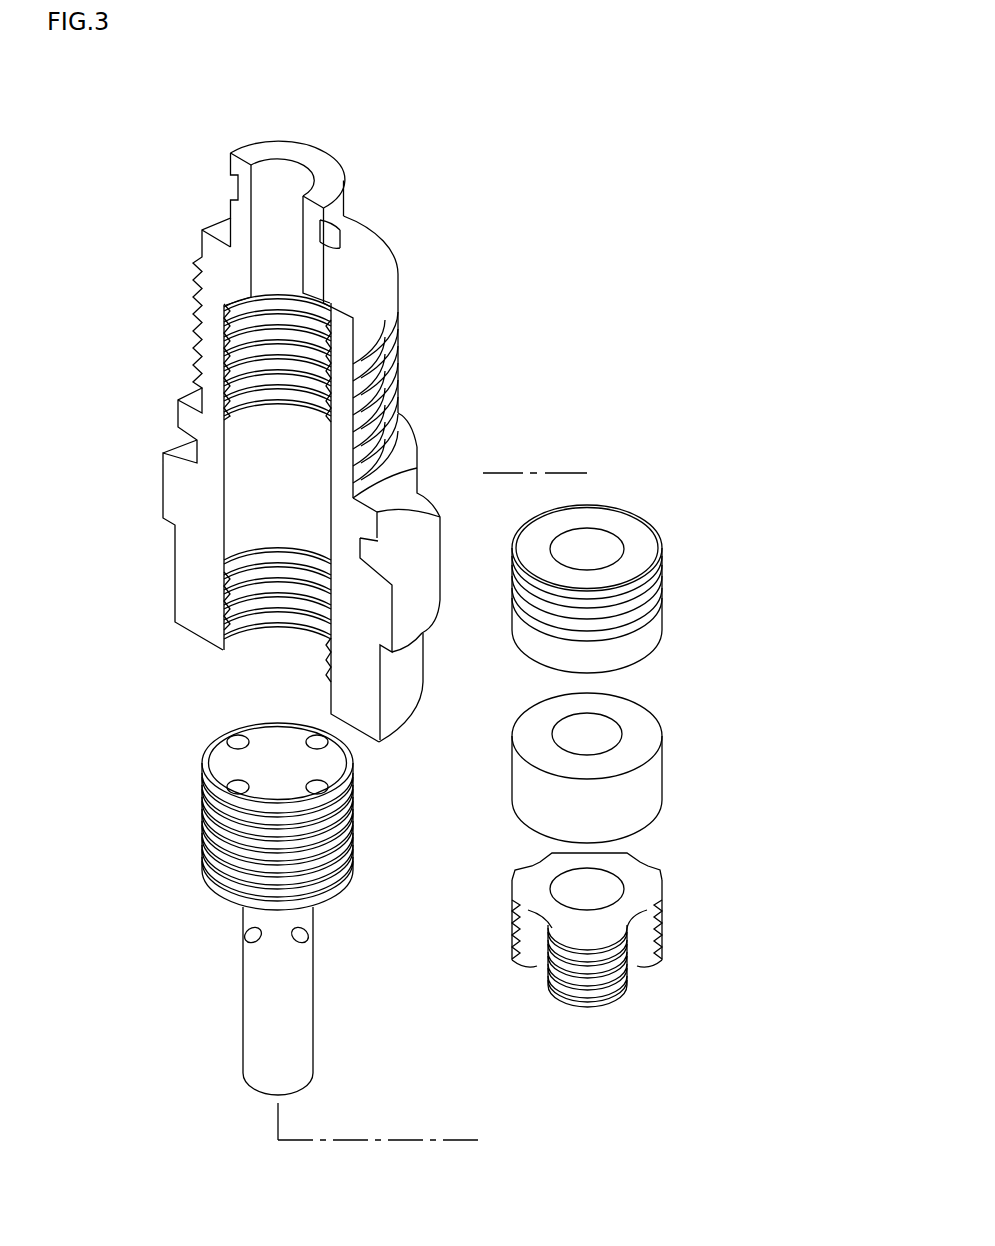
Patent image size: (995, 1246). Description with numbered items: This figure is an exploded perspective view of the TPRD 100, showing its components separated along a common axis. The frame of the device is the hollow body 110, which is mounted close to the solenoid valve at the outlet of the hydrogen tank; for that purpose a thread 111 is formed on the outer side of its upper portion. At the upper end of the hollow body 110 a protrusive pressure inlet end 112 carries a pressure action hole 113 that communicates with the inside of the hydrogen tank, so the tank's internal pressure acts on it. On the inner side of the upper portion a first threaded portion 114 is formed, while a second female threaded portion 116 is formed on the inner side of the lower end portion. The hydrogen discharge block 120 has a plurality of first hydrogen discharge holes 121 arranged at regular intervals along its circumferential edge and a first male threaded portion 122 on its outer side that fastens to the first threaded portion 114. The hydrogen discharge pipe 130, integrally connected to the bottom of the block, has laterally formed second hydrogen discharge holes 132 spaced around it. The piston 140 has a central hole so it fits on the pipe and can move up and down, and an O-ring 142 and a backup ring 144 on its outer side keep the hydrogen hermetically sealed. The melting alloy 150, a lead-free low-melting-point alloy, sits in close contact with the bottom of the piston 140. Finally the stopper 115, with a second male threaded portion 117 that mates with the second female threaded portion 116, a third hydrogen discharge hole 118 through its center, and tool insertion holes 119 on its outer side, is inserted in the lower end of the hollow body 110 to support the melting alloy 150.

The TPRD 100 is at (468, 107).
The hollow body 110 is at (378, 232).
The thread 111 is at (195, 297).
The pressure inlet end 112 is at (240, 180).
The pressure action hole 113 is at (288, 167).
The first threaded portion 114 is at (224, 388).
The stopper 115 is at (565, 998).
The second female threaded portion 116 is at (227, 573).
The second male threaded portion 117 is at (595, 963).
The third hydrogen discharge hole 118 is at (607, 897).
The tool insertion holes 119 is at (633, 963).
The hydrogen discharge block 120 is at (190, 809).
The first hydrogen discharge holes 121 is at (237, 742).
The first male threaded portion 122 is at (202, 853).
The hydrogen discharge pipe 130 is at (230, 1012).
The second hydrogen discharge holes 132 is at (252, 935).
The piston 140 is at (655, 625).
The O-ring 142 is at (653, 578).
The backup ring 144 is at (653, 597).
The melting alloy 150 is at (653, 777).